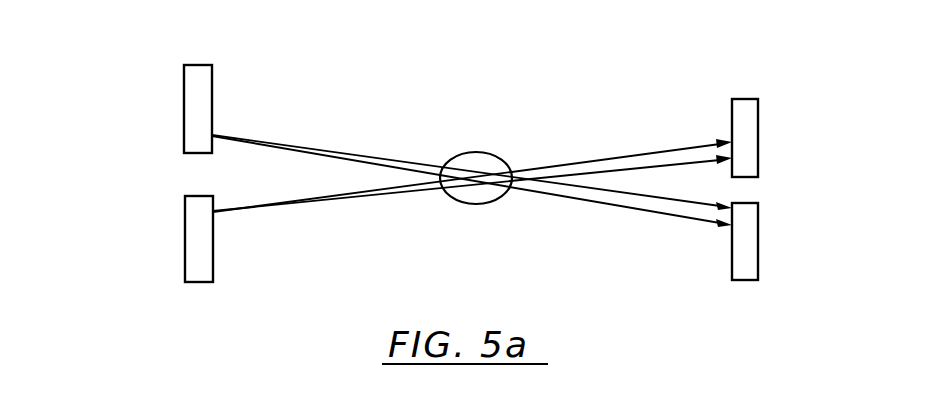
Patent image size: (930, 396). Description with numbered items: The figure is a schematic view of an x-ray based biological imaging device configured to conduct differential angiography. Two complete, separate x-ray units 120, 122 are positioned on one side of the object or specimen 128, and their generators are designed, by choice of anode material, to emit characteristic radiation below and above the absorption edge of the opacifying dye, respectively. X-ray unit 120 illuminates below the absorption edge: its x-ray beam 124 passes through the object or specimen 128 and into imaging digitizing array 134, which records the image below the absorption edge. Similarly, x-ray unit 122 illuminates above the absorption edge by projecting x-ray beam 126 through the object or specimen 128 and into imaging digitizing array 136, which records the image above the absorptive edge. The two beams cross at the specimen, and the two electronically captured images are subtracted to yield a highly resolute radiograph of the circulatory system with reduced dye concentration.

The x-ray unit 120 is at (184, 82).
The x-ray unit 122 is at (185, 263).
The x-ray beam 124 is at (367, 152).
The x-ray beam 126 is at (372, 198).
The object or specimen 128 is at (513, 152).
The imaging digitizing array 134 is at (778, 280).
The imaging digitizing array 136 is at (778, 188).